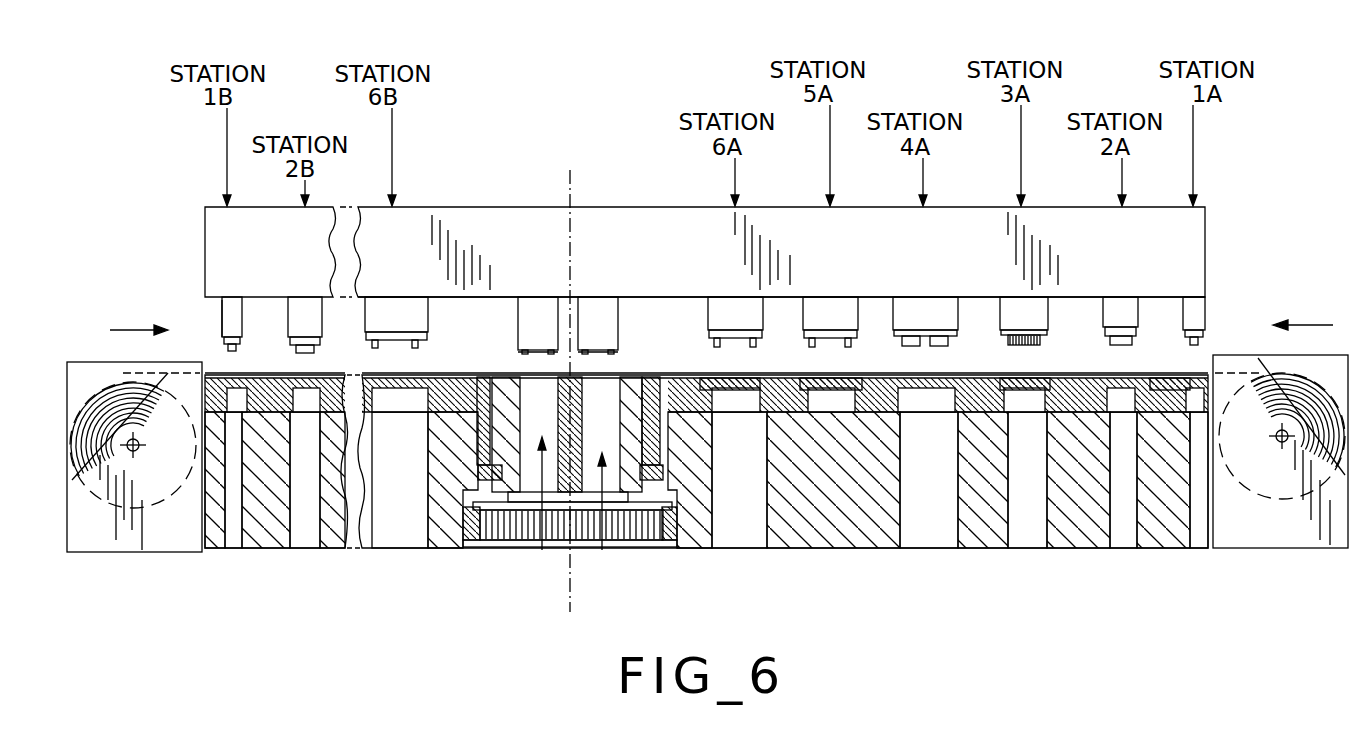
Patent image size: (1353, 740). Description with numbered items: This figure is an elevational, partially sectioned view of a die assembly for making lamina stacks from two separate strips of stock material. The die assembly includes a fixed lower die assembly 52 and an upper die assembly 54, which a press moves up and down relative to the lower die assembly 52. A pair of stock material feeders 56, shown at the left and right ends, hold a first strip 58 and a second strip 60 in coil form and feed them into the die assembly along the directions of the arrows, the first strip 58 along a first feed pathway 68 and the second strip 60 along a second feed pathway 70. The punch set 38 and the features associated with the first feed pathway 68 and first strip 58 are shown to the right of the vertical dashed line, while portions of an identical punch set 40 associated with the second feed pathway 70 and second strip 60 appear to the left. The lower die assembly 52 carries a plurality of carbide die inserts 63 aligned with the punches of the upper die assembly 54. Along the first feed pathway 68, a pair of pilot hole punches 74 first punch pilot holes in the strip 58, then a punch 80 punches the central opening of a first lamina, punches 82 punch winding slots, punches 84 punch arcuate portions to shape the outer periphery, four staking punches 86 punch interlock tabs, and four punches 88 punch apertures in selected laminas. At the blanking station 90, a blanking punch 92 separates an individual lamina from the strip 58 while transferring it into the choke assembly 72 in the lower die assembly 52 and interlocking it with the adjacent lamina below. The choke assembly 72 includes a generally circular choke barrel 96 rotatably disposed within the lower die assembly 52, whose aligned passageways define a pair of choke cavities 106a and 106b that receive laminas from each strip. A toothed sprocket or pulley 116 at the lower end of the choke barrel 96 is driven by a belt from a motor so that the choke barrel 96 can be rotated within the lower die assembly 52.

The punch set 38 is at (1220, 306).
The punch set 40 is at (208, 307).
The lower die assembly 52 is at (848, 556).
The upper die assembly 54 is at (1218, 237).
The stock material feeder 56 is at (83, 368).
The first strip 58 is at (1165, 377).
The second strip 60 is at (213, 377).
The carbide die insert 63 is at (778, 376).
The first feed pathway 68 is at (1303, 314).
The second feed pathway 70 is at (139, 319).
The choke assembly 72 is at (465, 447).
The pilot hole punch 74 is at (231, 305).
The punch 80 is at (305, 305).
The punch 82 is at (1026, 306).
The punch 84 is at (937, 308).
The staking punch 86 is at (843, 308).
The punch 88 is at (396, 310).
The blanking station 90 is at (504, 335).
The blanking punch 92 is at (540, 307).
The choke barrel 96 is at (640, 376).
The choke cavity 106a is at (605, 552).
The choke cavity 106b is at (538, 552).
The toothed sprocket or pulley 116 is at (640, 520).